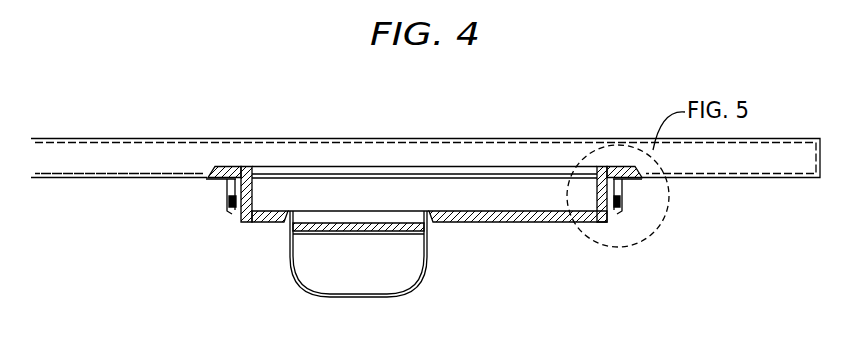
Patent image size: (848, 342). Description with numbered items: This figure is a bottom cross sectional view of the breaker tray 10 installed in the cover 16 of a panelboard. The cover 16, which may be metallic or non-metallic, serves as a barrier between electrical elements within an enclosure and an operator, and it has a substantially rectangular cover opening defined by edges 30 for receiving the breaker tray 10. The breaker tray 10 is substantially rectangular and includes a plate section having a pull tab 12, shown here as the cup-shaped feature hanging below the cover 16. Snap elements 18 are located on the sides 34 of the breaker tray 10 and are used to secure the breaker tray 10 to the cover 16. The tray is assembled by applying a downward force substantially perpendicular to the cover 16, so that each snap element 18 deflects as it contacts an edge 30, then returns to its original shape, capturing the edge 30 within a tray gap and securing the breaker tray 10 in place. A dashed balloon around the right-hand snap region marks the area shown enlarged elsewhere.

The cover 16 is at (173, 138).
The breaker tray 10 is at (241, 223).
The pull tab 12 is at (318, 276).
The edges 30 is at (212, 181).
The snap elements 18 is at (228, 194).
The sides 34 is at (234, 208).